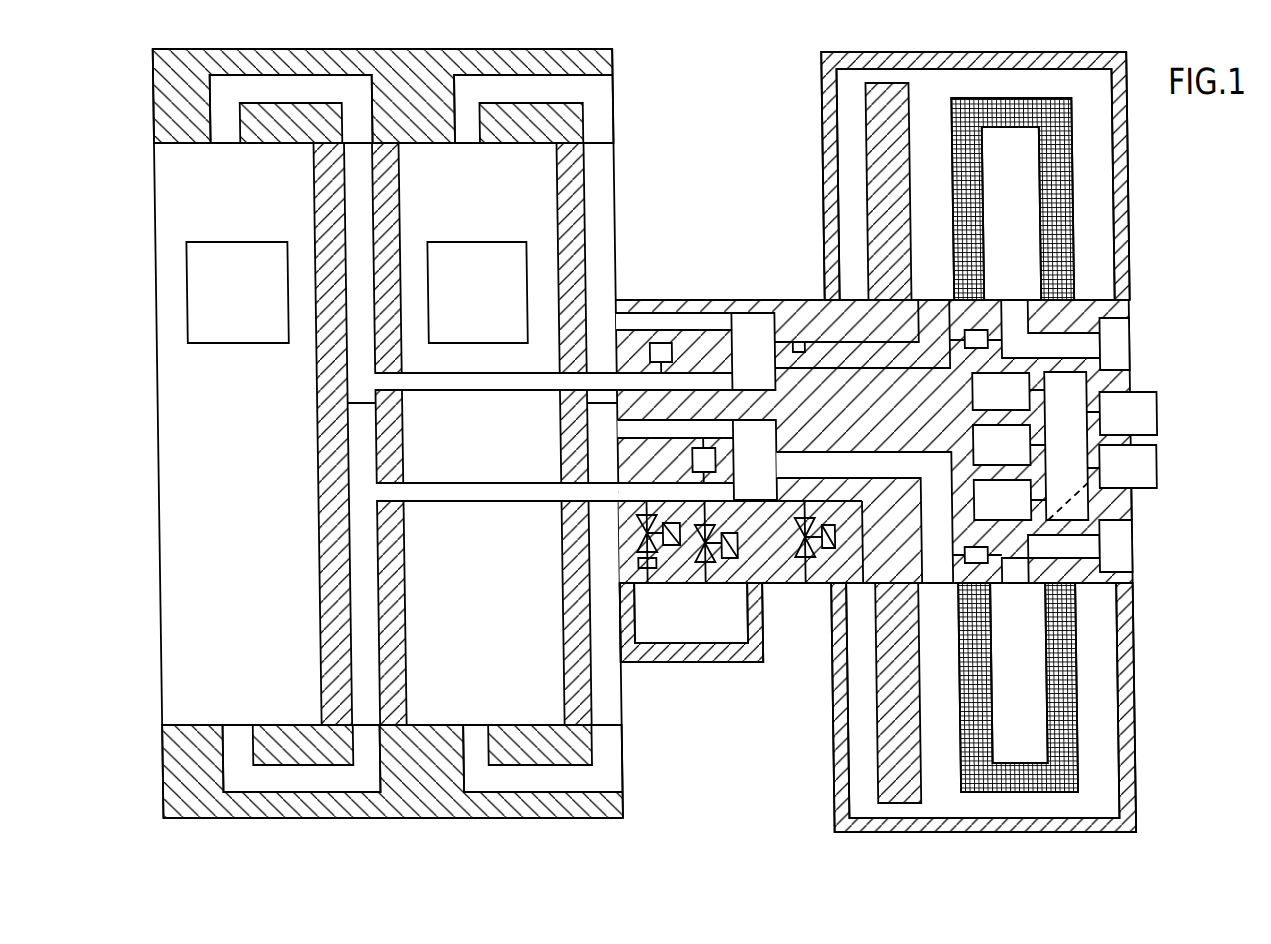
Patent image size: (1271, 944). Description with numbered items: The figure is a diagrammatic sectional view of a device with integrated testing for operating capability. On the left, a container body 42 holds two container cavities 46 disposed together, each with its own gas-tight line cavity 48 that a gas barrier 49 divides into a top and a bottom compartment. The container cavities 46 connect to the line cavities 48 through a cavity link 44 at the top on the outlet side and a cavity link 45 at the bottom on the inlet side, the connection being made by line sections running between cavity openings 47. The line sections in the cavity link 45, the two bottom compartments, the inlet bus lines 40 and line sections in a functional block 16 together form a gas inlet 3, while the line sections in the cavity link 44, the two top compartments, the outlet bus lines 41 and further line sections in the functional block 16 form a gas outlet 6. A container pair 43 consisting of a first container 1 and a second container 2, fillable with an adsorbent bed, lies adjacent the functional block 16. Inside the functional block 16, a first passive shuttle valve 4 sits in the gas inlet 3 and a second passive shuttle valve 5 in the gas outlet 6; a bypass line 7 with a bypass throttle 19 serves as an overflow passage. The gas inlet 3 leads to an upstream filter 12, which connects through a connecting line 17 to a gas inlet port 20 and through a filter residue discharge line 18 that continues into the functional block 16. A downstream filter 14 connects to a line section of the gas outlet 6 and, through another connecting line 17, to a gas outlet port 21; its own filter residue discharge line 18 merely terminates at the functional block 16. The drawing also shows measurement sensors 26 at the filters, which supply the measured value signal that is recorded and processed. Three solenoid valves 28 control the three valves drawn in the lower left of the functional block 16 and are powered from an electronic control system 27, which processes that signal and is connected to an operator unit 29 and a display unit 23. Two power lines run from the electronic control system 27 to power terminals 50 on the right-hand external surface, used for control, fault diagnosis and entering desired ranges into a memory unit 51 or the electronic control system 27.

The first container 1 is at (176, 612).
The second container 2 is at (545, 672).
The gas inlet 3 is at (345, 590).
The first passive shuttle valve 4 is at (740, 475).
The second passive shuttle valve 5 is at (748, 333).
The gas outlet 6 is at (347, 288).
The bypass line 7 is at (647, 344).
The upstream filter 12 is at (995, 678).
The downstream filter 14 is at (994, 243).
The functional block 16 is at (786, 300).
The connecting line 17 is at (1076, 348).
The filter residue discharge line 18 is at (846, 164).
The bypass throttle 19 is at (657, 352).
The gas inlet port 20 is at (1125, 565).
The gas outlet port 21 is at (1126, 330).
The display unit 23 is at (1108, 482).
The sensor 26 is at (977, 329).
The electronic control system 27 is at (1048, 455).
The solenoid valves 28 is at (983, 406).
The operator unit 29 is at (1109, 428).
The inlet bus lines 40 is at (613, 430).
The outlet bus lines 41 is at (483, 374).
The container body 42 is at (557, 232).
The container pair 43 is at (409, 74).
The cavity link 44 is at (580, 49).
The cavity link 45 is at (417, 795).
The container cavities 46 is at (219, 458).
The cavity openings 47 is at (226, 147).
The line cavities 48 is at (358, 205).
The gas barrier 49 is at (370, 403).
The power terminals 50 is at (1125, 505).
The memory unit 51 is at (1080, 514).